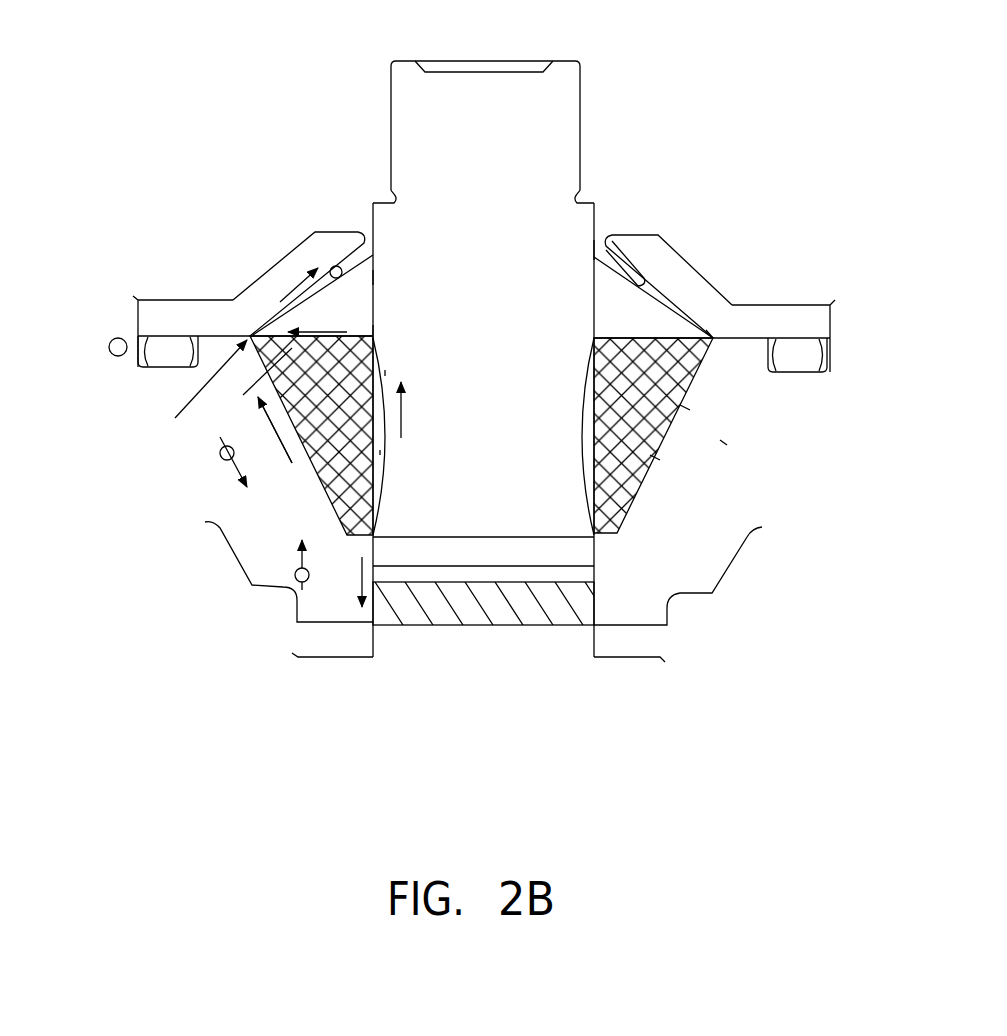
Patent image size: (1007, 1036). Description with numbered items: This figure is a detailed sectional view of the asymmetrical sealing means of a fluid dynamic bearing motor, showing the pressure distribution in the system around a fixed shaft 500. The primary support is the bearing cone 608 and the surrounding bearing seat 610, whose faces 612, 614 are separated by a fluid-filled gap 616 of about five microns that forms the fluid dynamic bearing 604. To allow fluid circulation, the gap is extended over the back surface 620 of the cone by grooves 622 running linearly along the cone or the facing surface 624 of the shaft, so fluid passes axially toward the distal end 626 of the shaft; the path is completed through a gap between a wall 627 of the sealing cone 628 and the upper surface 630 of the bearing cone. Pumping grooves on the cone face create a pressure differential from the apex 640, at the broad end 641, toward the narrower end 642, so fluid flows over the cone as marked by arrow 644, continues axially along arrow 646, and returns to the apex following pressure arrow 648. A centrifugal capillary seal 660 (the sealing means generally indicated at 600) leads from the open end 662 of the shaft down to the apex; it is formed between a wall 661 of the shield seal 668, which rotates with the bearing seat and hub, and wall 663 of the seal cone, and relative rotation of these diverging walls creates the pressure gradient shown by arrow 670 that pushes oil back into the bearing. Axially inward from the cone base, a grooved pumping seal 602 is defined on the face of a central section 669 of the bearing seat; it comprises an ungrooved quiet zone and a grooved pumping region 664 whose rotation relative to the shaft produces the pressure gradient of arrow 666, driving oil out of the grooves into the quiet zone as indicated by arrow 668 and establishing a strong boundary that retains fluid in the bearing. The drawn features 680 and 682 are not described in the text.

The shaft 500 is at (580, 118).
The centrifugal capillary seal 600 is at (735, 250).
The grooved pumping seal 602 is at (615, 590).
The fluid dynamic bearing 604 is at (727, 445).
The bearing cone 608 is at (690, 410).
The bearing seat 610 is at (742, 523).
The face 612 is at (715, 347).
The face 614 is at (655, 458).
The gap 616 is at (718, 338).
The back surface 620 is at (385, 373).
The grooves 622 is at (380, 452).
The facing surface 624 is at (378, 350).
The distal end 626 is at (487, 82).
The wall 627 is at (372, 330).
The sealing cone 628 is at (367, 278).
The upper surface 630 is at (247, 386).
The apex 640 is at (243, 325).
The broad end 641 is at (197, 396).
The narrower end 642 is at (347, 532).
The arrow 644 is at (222, 458).
The arrow 646 is at (412, 400).
The pressure arrow 648 is at (340, 297).
The centrifugal capillary seal 660 is at (653, 260).
The wall 661 is at (645, 283).
The open end 662 is at (597, 240).
The wall 663 is at (698, 318).
The grooved pumping region 664 is at (577, 608).
The arrow 666 is at (330, 612).
The shield seal 668 is at (163, 310).
The central section 669 is at (598, 553).
The arrow 670 is at (275, 267).
The O-ring 680 is at (135, 370).
The lip seal 682 is at (167, 358).